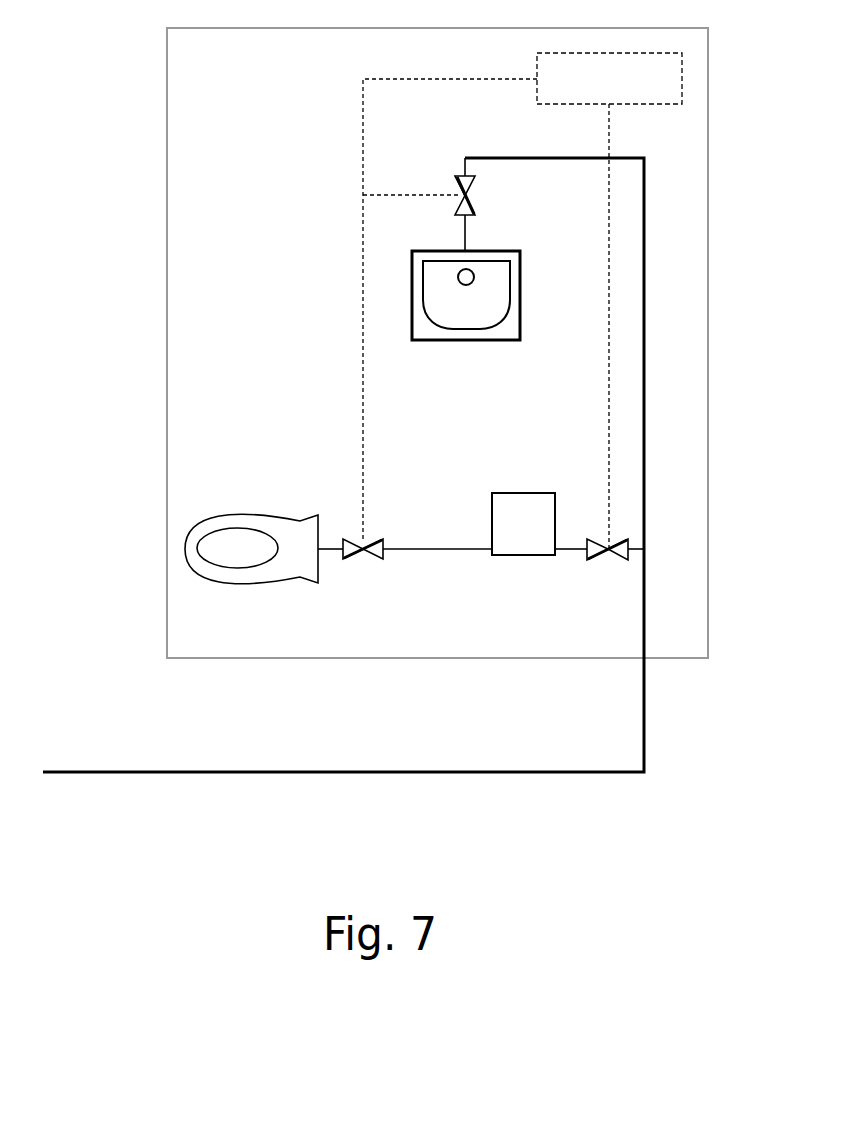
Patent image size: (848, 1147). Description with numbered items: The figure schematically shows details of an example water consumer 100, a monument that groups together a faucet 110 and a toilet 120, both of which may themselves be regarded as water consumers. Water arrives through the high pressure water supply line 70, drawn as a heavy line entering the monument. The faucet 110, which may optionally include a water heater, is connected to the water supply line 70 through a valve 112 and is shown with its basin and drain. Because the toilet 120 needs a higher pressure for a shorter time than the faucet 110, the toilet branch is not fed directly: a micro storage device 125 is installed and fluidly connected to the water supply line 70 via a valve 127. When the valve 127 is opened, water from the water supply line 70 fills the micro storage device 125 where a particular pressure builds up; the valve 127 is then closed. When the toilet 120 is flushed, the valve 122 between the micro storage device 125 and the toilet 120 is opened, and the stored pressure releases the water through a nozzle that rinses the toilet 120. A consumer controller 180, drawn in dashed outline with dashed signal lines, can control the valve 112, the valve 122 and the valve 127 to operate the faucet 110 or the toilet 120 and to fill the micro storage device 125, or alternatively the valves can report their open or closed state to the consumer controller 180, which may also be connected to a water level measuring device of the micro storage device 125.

The water consumer 100 is at (167, 309).
The water supply line 70 is at (645, 707).
The consumer controller 180 is at (648, 85).
The valve 112 is at (473, 205).
The faucet 110 is at (513, 295).
The toilet 120 is at (187, 548).
The valve 122 is at (353, 539).
The micro storage device 125 is at (538, 516).
The valve 127 is at (630, 553).